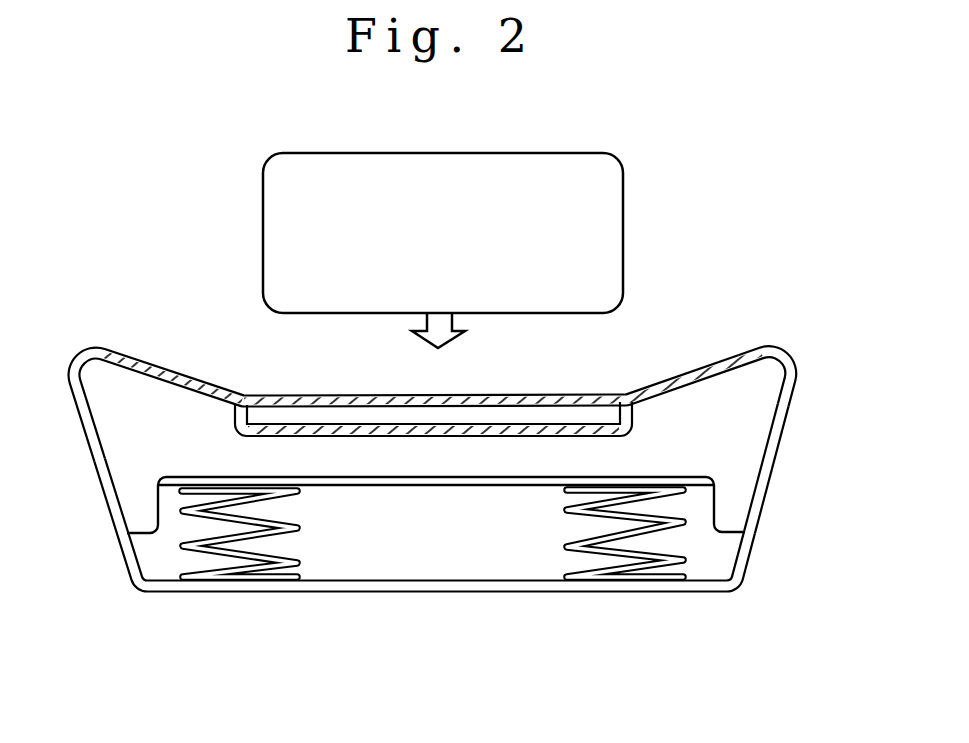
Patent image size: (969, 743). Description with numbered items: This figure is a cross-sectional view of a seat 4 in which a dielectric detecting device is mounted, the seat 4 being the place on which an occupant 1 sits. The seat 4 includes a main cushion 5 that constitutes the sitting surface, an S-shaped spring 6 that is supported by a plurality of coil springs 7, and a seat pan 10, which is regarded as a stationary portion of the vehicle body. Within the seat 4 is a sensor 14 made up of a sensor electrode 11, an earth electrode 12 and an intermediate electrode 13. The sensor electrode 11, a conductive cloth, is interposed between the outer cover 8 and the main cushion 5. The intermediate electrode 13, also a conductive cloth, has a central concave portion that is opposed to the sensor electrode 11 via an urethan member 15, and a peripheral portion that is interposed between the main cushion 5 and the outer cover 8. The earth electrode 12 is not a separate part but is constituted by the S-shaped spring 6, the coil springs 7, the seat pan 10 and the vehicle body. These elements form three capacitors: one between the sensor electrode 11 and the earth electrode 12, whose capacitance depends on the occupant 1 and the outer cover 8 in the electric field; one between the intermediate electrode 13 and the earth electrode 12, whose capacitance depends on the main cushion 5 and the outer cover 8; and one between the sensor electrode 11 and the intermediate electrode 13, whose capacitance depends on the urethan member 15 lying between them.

The occupant 1 is at (625, 223).
The seat 4 is at (254, 598).
The main cushion 5 is at (743, 475).
The S-shaped spring 6 is at (424, 487).
The coil springs 7 is at (298, 527).
The outer cover 8 is at (795, 355).
The seat pan 10 is at (729, 589).
The sensor electrode 11 is at (546, 400).
The earth electrode 12 is at (573, 594).
The intermediate electrode 13 is at (694, 372).
The sensor 14 is at (689, 461).
The urethan member 15 is at (360, 418).